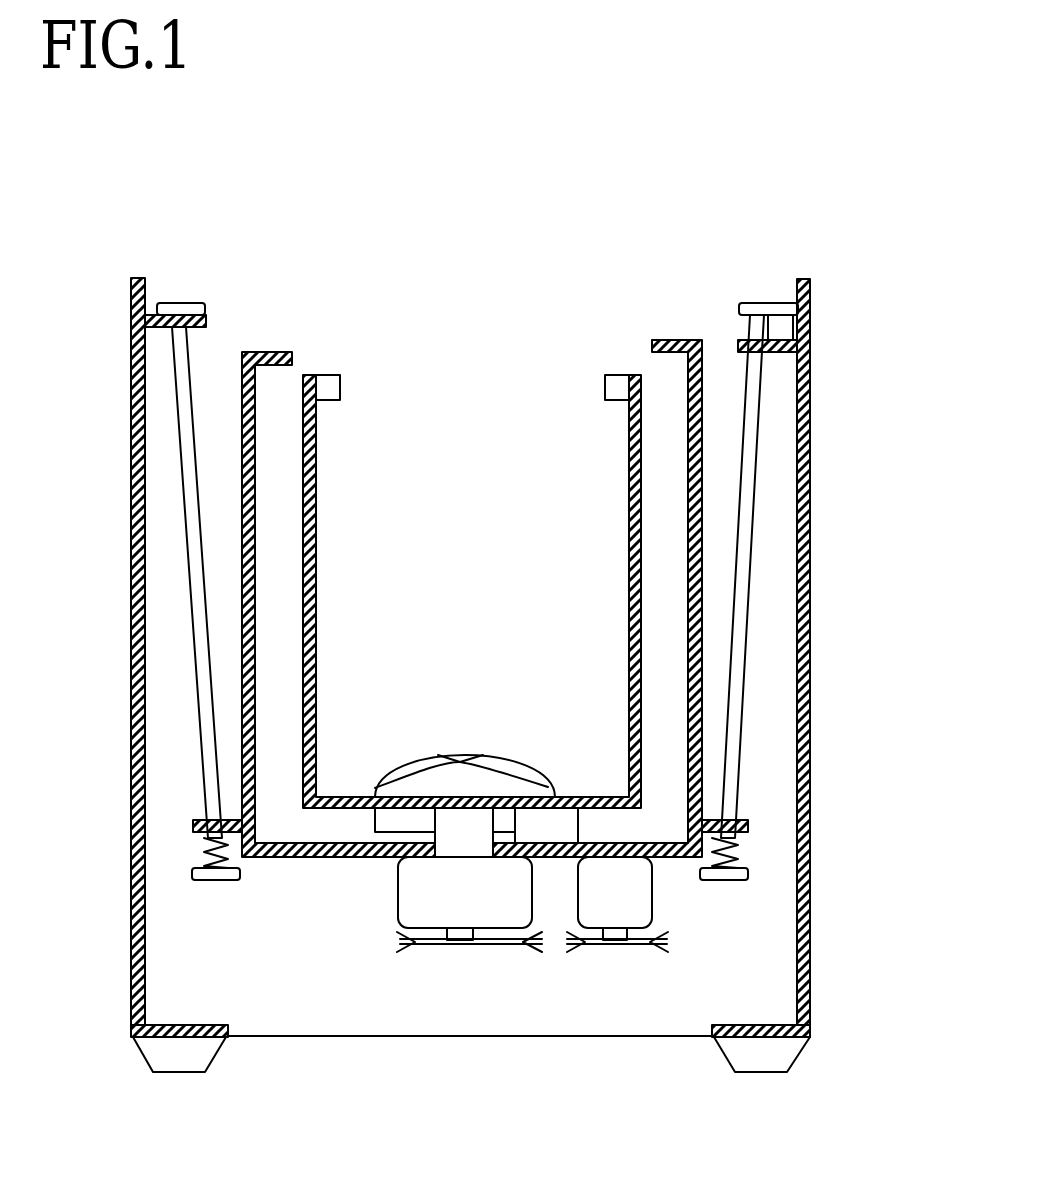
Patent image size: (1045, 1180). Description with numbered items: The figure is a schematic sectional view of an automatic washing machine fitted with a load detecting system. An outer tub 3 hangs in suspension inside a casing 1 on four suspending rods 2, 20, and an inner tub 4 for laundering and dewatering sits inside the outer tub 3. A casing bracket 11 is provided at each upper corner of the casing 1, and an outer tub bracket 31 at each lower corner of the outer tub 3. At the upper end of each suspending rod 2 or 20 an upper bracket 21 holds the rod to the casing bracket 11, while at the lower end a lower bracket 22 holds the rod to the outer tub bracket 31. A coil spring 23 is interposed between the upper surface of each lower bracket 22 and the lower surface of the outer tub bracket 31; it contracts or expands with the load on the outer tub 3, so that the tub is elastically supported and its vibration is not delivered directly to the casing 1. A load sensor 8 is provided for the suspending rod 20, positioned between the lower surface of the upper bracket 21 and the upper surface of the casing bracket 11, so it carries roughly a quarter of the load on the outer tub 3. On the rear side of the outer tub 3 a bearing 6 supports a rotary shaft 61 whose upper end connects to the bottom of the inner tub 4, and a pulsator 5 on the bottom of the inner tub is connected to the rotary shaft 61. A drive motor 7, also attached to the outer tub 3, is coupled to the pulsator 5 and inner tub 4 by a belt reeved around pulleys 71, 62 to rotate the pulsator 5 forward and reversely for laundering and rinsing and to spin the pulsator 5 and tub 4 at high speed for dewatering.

The casing 1 is at (810, 578).
The suspending rod 2 is at (190, 508).
The outer tub 3 is at (255, 578).
The inner tub 4 is at (312, 458).
The pulsator 5 is at (460, 755).
The bearing 6 is at (435, 888).
The drive motor 7 is at (587, 921).
The load sensor 8 is at (785, 327).
The casing bracket 11 is at (207, 327).
The suspending rod 20 is at (748, 497).
The upper bracket 21 is at (182, 303).
The lower bracket 22 is at (193, 870).
The coil spring 23 is at (238, 858).
The outer tub bracket 31 is at (193, 825).
The rotary shaft 61 is at (470, 832).
The pulley 62 is at (457, 944).
The pulley 71 is at (610, 944).